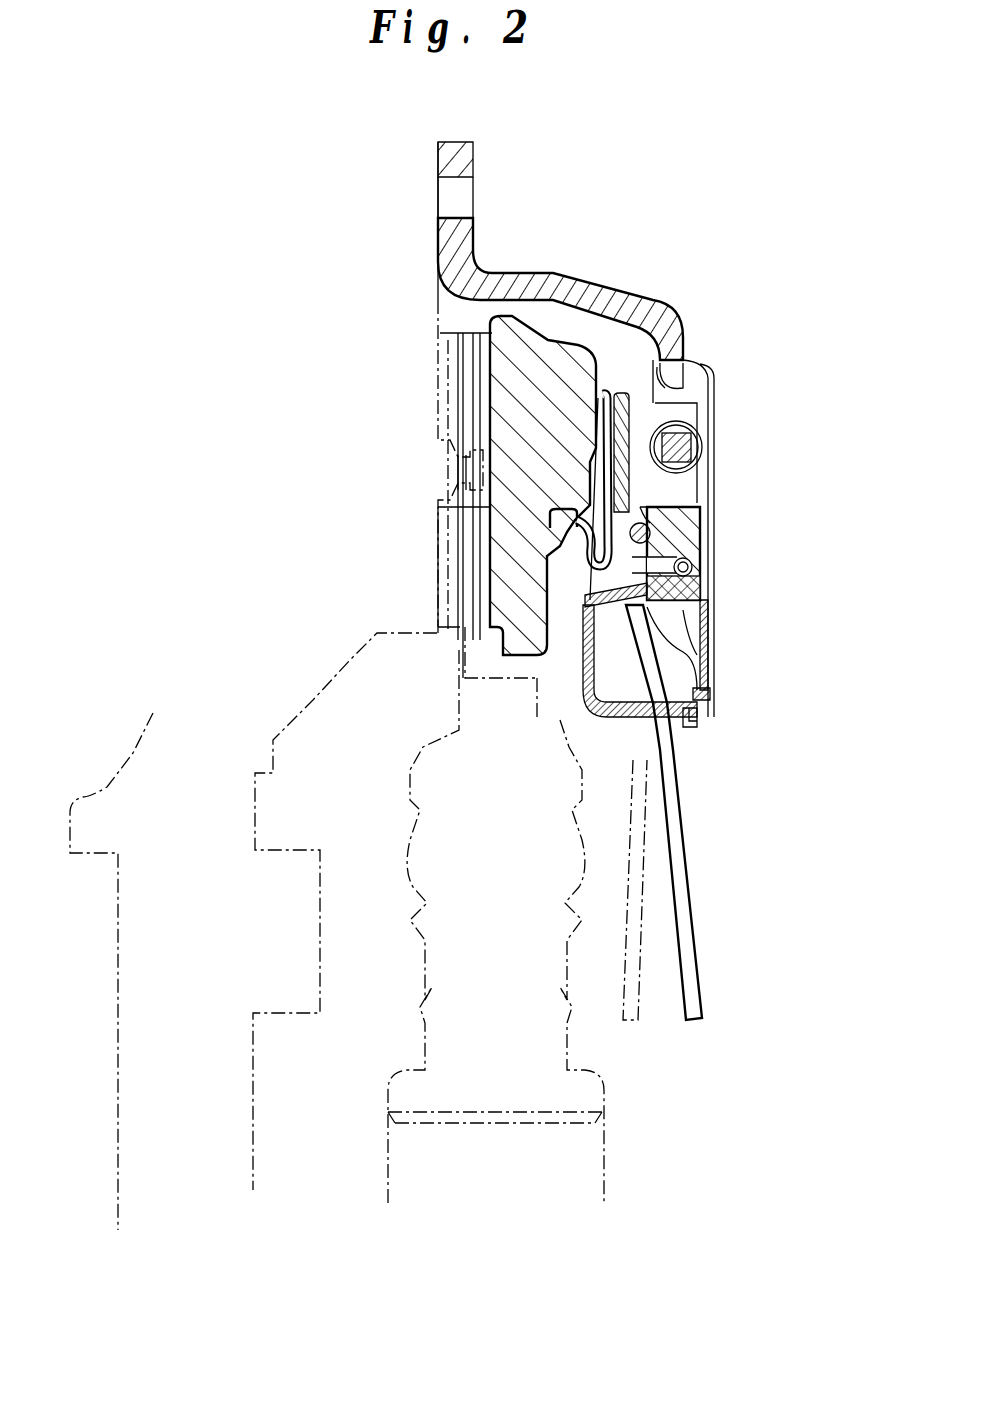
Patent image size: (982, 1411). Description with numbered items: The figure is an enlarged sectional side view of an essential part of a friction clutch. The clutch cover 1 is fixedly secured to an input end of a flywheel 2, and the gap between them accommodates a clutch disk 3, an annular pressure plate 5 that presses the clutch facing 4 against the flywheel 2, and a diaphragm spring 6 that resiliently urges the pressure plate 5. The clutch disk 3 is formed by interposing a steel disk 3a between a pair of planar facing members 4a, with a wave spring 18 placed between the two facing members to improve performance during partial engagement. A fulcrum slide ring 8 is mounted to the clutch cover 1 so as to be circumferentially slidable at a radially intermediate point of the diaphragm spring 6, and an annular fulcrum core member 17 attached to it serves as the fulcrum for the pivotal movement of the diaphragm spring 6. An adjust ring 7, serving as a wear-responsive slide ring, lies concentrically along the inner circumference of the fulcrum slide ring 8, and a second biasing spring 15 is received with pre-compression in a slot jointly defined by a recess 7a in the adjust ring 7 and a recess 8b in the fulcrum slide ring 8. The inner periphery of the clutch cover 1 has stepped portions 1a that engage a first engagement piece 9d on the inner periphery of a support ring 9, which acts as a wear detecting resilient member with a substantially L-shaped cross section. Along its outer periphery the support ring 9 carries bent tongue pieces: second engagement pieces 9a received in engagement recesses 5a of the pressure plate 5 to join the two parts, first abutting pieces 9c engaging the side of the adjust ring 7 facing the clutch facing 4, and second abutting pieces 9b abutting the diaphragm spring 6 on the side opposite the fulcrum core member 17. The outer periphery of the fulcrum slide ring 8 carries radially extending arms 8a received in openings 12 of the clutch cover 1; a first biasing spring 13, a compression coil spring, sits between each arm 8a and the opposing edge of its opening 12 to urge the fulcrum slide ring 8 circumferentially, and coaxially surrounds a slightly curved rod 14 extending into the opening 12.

The clutch cover 1 is at (617, 302).
The stepped portions 1a is at (712, 702).
The flywheel 2 is at (150, 715).
The clutch disk 3 is at (455, 697).
The steel disk 3a is at (460, 647).
The clutch facing 4 is at (437, 357).
The planar facing members 4a is at (483, 343).
The pressure plate 5 is at (554, 330).
The engagement recesses 5a is at (550, 517).
The diaphragm spring 6 is at (695, 885).
The adjust ring 7 is at (705, 590).
The recess 7a is at (692, 568).
The fulcrum slide ring 8 is at (714, 545).
The arms 8a is at (683, 390).
The recess 8b is at (643, 560).
The support ring 9 is at (580, 697).
The second engagement pieces 9a is at (560, 548).
The second abutting pieces 9b is at (605, 443).
The first abutting pieces 9c is at (605, 612).
The first engagement piece 9d is at (700, 725).
The openings 12 is at (685, 372).
The first biasing spring 13 is at (702, 432).
The rod 14 is at (695, 447).
The second biasing springs 15 is at (680, 628).
The fulcrum core member 17 is at (648, 515).
The wave spring 18 is at (470, 565).